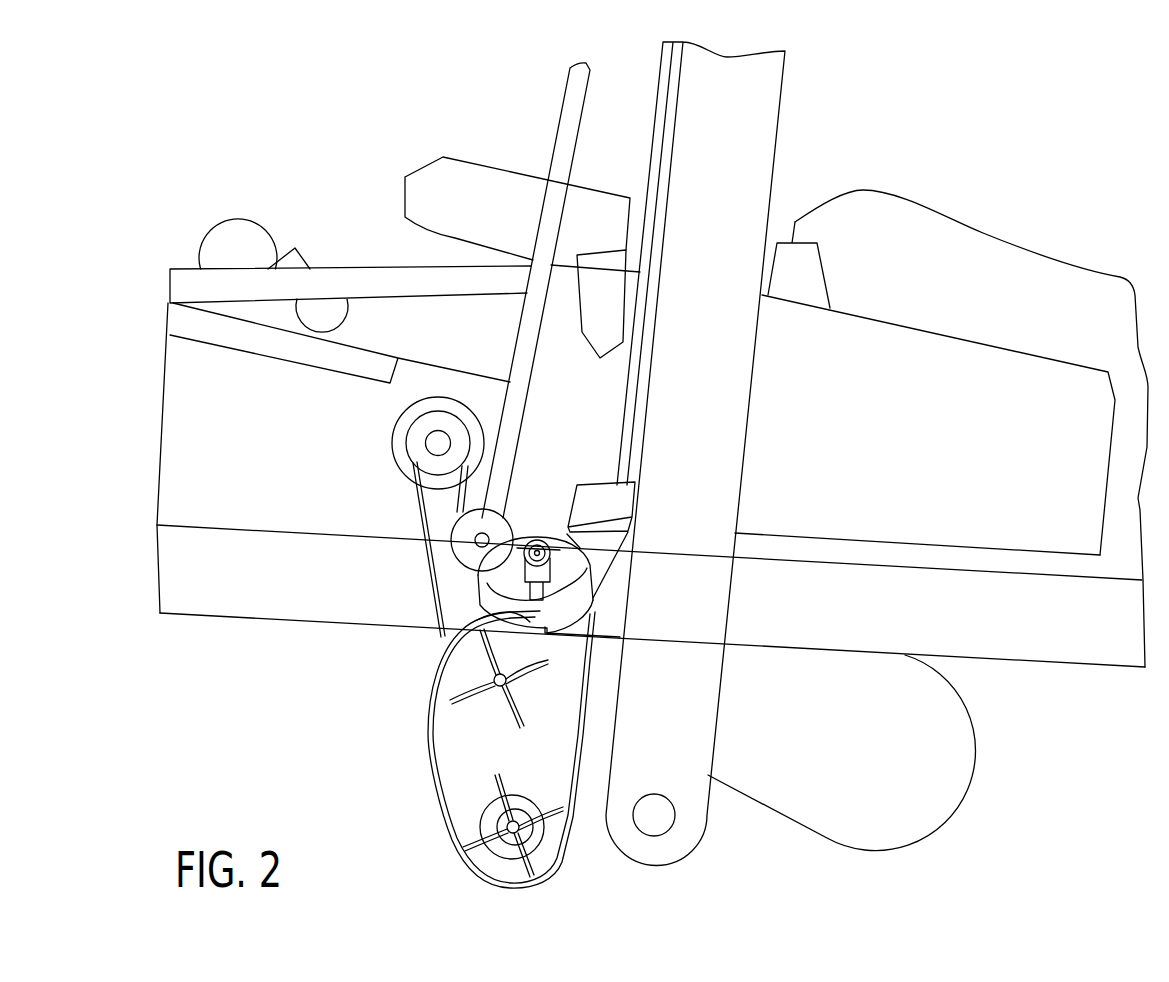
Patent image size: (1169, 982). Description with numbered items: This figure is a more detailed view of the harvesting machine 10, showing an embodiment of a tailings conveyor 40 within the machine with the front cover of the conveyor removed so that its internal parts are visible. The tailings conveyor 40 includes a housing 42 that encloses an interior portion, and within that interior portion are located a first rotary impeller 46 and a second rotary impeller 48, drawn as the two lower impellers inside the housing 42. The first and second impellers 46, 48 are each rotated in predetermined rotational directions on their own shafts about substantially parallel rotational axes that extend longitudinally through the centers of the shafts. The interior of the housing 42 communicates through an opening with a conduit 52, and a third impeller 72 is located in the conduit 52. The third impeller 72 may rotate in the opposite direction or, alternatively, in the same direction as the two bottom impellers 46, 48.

The harvester / machine 10 is at (652, 453).
The tailings conveyor 40 is at (504, 650).
The housing 42 is at (428, 775).
The first rotary impeller 46 is at (478, 822).
The second rotary impeller 48 is at (512, 688).
The conduit 52 is at (610, 570).
The third impeller 72 is at (554, 543).